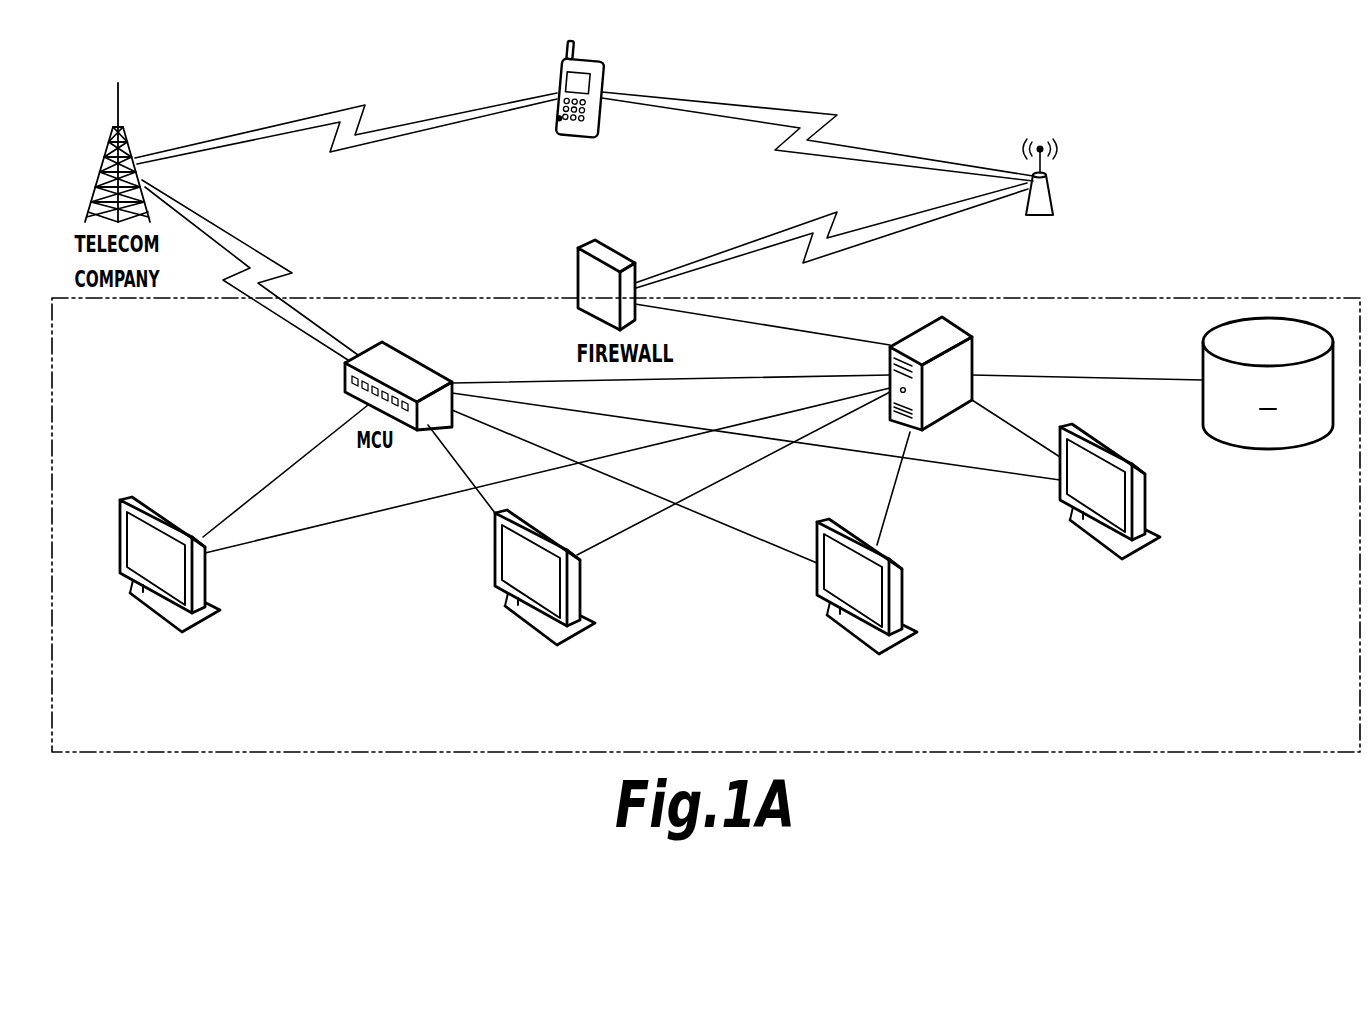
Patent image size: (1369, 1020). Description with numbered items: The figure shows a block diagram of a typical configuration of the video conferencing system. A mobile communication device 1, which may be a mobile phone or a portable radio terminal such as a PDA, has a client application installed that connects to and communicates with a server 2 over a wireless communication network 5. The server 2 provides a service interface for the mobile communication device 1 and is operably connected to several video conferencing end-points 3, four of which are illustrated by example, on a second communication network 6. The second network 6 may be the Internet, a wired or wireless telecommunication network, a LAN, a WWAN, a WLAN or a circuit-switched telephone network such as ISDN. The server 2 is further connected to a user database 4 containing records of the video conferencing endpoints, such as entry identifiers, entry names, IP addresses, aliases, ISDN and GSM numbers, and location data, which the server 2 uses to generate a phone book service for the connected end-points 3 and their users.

The mobile communication device 1 is at (591, 65).
The server 2 is at (967, 355).
The video conferencing end-points 3 is at (192, 622).
The user database 4 is at (1268, 402).
The wireless communication network 5 is at (1047, 192).
The second communication network 6 is at (210, 142).